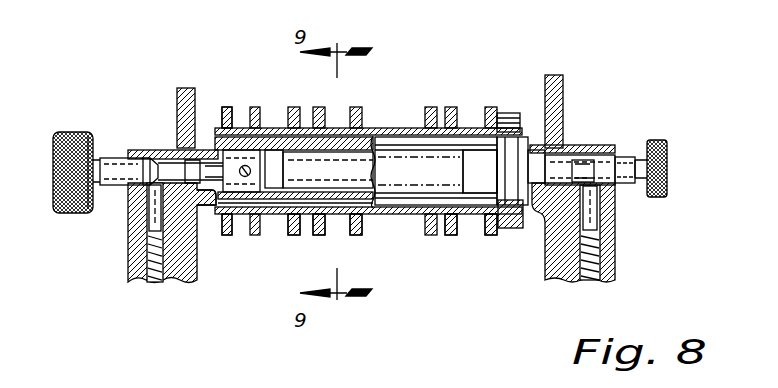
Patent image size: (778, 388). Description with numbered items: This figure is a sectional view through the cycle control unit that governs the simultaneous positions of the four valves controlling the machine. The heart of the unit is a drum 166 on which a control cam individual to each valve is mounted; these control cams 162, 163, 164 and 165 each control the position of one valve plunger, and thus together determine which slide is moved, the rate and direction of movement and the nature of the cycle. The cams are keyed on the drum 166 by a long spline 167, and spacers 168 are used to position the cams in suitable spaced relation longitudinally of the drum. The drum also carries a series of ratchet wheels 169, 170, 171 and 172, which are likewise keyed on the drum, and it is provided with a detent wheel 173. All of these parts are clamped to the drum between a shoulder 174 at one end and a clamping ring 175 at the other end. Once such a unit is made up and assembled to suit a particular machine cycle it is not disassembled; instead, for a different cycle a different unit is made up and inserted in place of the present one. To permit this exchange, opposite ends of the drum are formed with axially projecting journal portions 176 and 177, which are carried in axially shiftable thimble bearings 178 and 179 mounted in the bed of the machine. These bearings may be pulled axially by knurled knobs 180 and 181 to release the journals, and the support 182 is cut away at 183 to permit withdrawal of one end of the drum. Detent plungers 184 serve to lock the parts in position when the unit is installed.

The control cam 162 is at (278, 233).
The control cam 163 is at (314, 233).
The control cam 164 is at (433, 236).
The control cam 165 is at (489, 236).
The drum 166 is at (210, 143).
The long spline 167 is at (371, 203).
The spacers 168 is at (268, 136).
The ratchet wheel 169 is at (203, 198).
The ratchet wheel 170 is at (291, 237).
The ratchet wheel 171 is at (358, 235).
The ratchet wheel 172 is at (451, 238).
The detent wheel 173 is at (465, 118).
The shoulder 174 is at (235, 130).
The clamping ring 175 is at (513, 229).
The journal portion 176 is at (222, 236).
The journal portion 177 is at (553, 175).
The thimble bearing 178 is at (168, 149).
The thimble bearing 179 is at (583, 163).
The knurled knob 180 is at (88, 214).
The knurled knob 181 is at (655, 198).
The support 182 is at (128, 269).
The cut away 183 is at (203, 143).
The detent plungers 184 is at (153, 212).